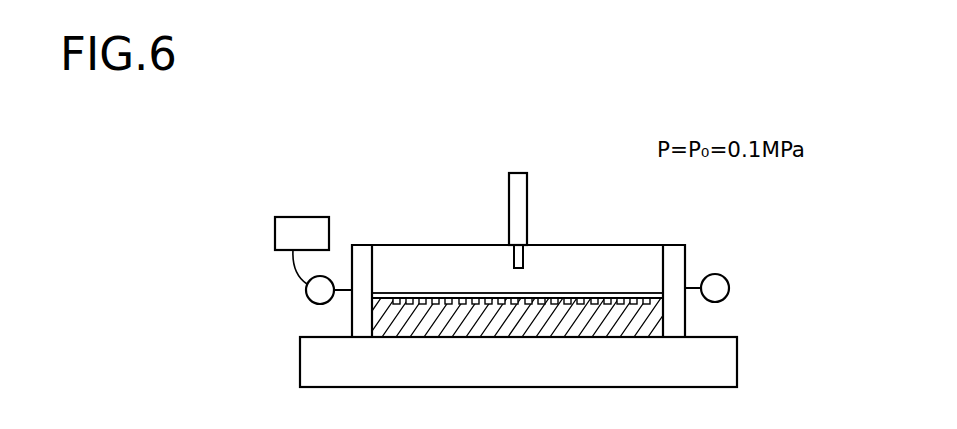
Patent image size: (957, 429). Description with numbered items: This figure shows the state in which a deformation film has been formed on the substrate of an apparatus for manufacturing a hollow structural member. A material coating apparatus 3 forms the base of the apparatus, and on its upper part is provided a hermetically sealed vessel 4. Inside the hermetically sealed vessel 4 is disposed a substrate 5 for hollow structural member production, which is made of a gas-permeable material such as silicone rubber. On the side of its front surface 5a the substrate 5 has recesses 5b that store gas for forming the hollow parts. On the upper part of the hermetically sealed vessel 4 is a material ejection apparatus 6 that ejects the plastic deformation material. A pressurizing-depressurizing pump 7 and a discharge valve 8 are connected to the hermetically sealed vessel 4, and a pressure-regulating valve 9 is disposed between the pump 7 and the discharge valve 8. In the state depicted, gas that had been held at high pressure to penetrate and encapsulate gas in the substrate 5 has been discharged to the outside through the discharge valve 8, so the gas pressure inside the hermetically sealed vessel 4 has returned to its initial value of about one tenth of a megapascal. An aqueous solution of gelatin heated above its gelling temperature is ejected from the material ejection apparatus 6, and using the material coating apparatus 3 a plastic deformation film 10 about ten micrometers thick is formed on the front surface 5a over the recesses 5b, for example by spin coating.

The material coating apparatus 3 is at (307, 358).
The hermetically sealed vessel 4 is at (365, 245).
The substrate for hollow structural member production 5 is at (514, 256).
The front surface 5a is at (658, 305).
The recesses 5b is at (430, 298).
The material ejection apparatus 6 is at (521, 173).
The pressurizing-depressurizing pump 7 is at (300, 217).
The discharge valve 8 is at (716, 274).
The pressure-regulating valve 9 is at (306, 290).
The plastic deformation film 10 is at (398, 293).